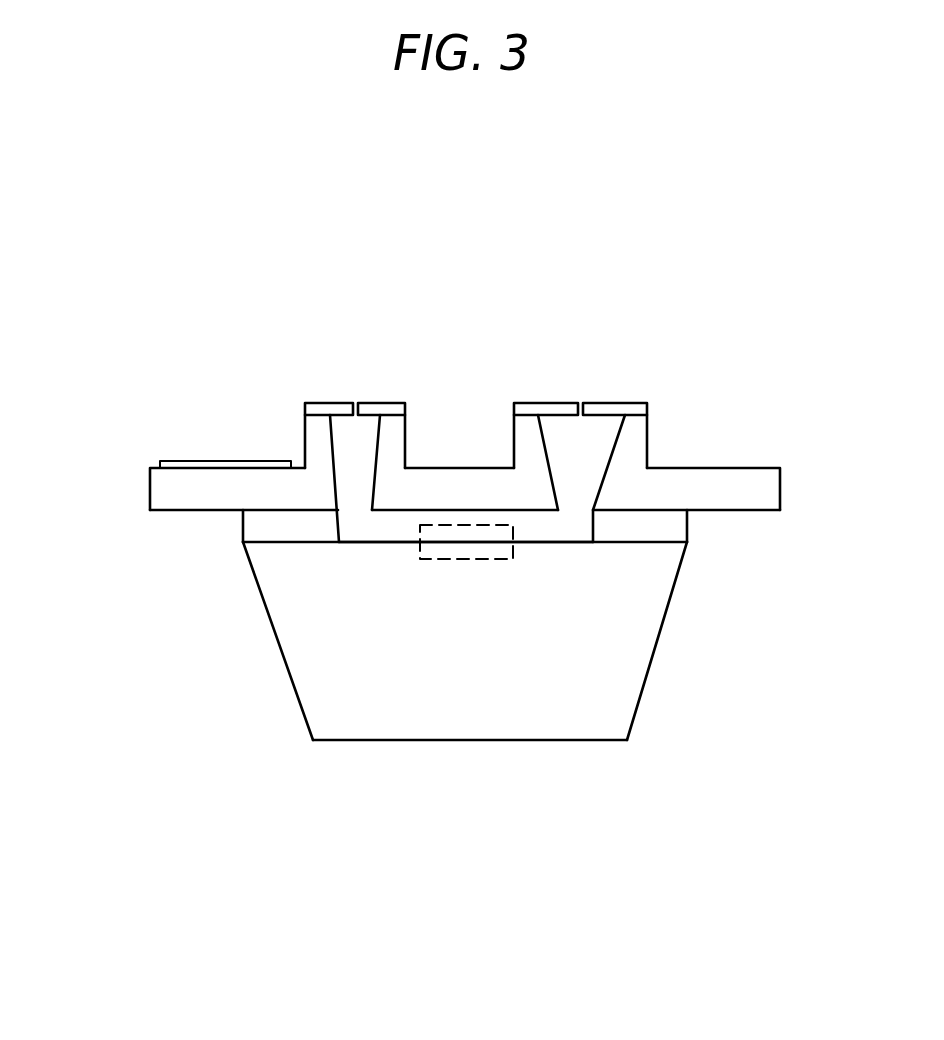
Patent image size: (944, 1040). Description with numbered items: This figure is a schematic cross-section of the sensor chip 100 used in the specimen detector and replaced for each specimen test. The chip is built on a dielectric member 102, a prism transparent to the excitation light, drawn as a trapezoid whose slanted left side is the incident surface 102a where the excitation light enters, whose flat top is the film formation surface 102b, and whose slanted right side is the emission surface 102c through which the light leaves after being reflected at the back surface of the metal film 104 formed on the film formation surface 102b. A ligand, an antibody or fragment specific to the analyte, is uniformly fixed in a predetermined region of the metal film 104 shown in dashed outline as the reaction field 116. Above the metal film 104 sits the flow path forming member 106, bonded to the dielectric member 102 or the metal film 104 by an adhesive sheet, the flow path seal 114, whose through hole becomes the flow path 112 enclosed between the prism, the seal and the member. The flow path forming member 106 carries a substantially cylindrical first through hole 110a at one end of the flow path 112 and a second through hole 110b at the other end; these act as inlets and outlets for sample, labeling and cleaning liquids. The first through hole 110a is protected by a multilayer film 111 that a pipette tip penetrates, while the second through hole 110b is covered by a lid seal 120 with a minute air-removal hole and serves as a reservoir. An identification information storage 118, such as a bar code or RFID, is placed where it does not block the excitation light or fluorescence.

The sensor chip 100 is at (675, 218).
The dielectric member 102 is at (598, 708).
The incident surface 102a is at (663, 630).
The film formation surface 102b is at (332, 543).
The emission surface 102c is at (282, 655).
The metal film 104 is at (563, 542).
The flow path forming member 106 is at (722, 488).
The first through hole 110a is at (338, 462).
The second through hole 110b is at (587, 417).
The multilayer film 111 is at (387, 410).
The flow path 112 is at (385, 523).
The flow path seal 114 is at (263, 523).
The reaction field 116 is at (438, 542).
The identification information storage 118 is at (192, 465).
The lid seal 120 is at (557, 412).